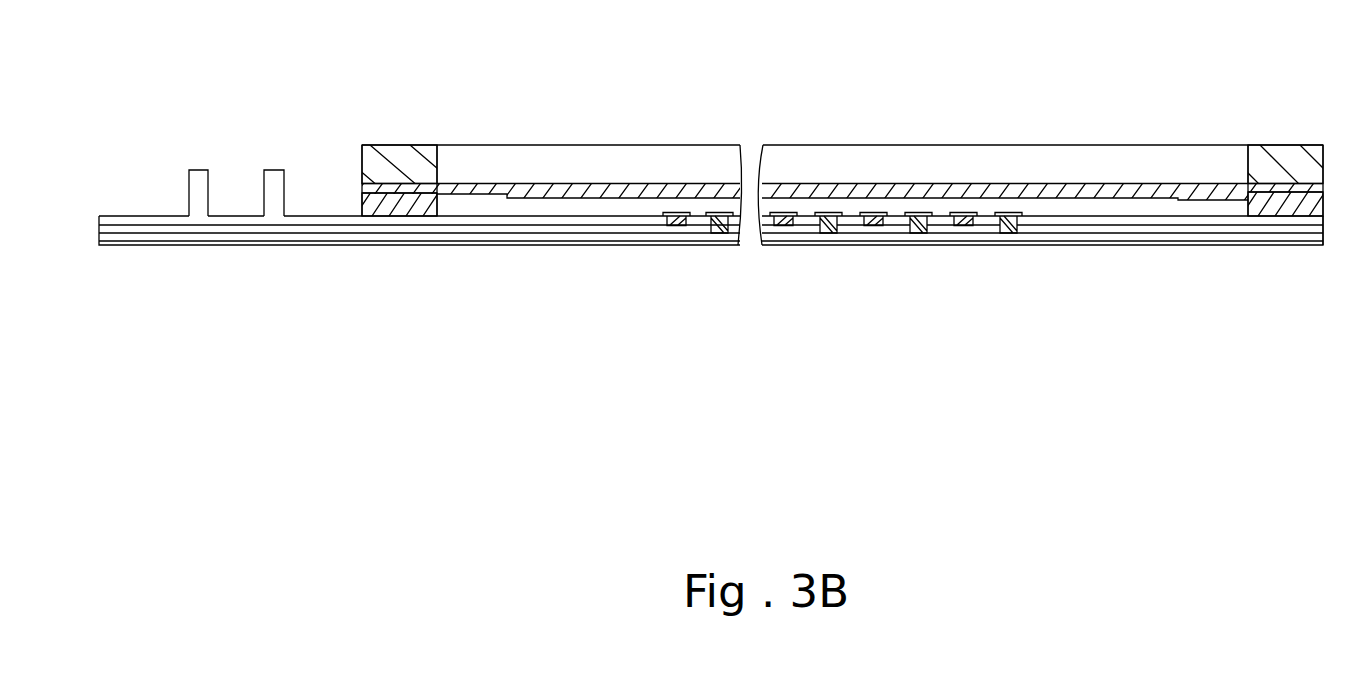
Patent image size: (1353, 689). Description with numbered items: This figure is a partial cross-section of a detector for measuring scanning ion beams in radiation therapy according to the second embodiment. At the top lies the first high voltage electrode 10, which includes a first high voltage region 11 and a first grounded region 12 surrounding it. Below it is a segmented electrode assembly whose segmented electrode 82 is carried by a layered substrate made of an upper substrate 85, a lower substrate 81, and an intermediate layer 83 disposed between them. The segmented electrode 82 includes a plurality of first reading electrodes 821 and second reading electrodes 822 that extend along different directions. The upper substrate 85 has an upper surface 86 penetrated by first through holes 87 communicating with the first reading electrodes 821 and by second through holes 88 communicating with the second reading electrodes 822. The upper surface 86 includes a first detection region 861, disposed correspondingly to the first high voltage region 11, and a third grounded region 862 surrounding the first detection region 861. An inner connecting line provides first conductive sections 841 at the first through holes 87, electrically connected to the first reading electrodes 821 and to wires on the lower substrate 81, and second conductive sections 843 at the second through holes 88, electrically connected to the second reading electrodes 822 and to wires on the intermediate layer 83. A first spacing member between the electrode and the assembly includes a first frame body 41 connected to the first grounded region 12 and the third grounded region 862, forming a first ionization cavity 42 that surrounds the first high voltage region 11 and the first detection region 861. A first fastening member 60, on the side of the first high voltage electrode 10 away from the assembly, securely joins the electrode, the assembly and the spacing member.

The first high voltage electrode 10 is at (487, 77).
The first high voltage region 11 is at (466, 191).
The first grounded region 12 is at (390, 190).
The first frame body 41 is at (362, 202).
The first ionization cavity 42 is at (1108, 208).
The first fastening member 60 is at (1293, 156).
The segmented electrode 82 is at (758, 67).
The first reading electrode 821 is at (720, 213).
The second reading electrode 822 is at (673, 213).
The first through hole 87 is at (725, 220).
The second through hole 88 is at (972, 215).
The second conductive section 843 is at (678, 220).
The first conductive section 841 is at (725, 218).
The upper substrate 85 is at (806, 222).
The intermediate layer 83 is at (853, 228).
The lower substrate 81 is at (905, 235).
The upper surface 86 is at (457, 425).
The first detection region 861 is at (463, 191).
The third grounded region 862 is at (396, 200).